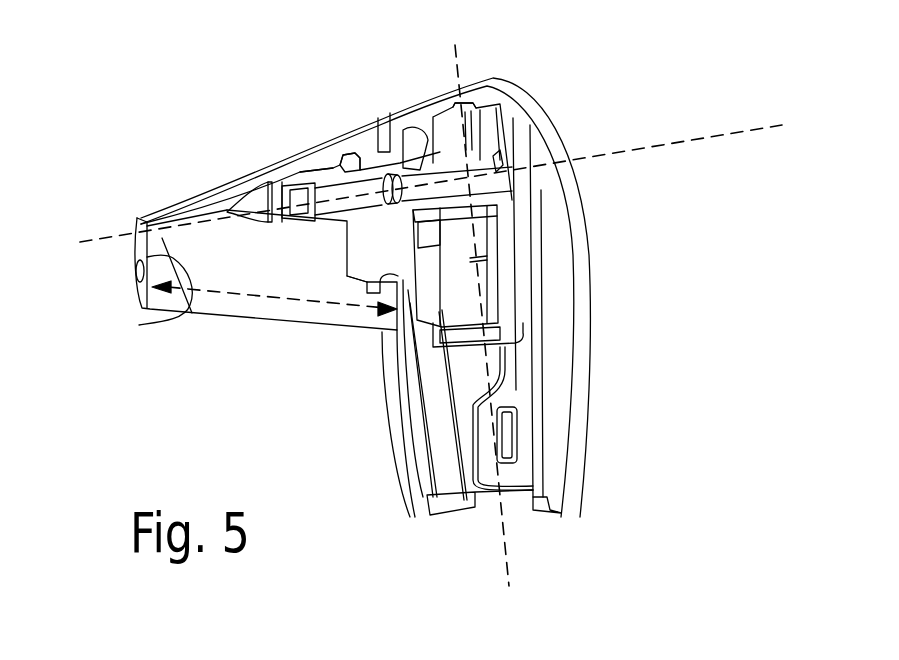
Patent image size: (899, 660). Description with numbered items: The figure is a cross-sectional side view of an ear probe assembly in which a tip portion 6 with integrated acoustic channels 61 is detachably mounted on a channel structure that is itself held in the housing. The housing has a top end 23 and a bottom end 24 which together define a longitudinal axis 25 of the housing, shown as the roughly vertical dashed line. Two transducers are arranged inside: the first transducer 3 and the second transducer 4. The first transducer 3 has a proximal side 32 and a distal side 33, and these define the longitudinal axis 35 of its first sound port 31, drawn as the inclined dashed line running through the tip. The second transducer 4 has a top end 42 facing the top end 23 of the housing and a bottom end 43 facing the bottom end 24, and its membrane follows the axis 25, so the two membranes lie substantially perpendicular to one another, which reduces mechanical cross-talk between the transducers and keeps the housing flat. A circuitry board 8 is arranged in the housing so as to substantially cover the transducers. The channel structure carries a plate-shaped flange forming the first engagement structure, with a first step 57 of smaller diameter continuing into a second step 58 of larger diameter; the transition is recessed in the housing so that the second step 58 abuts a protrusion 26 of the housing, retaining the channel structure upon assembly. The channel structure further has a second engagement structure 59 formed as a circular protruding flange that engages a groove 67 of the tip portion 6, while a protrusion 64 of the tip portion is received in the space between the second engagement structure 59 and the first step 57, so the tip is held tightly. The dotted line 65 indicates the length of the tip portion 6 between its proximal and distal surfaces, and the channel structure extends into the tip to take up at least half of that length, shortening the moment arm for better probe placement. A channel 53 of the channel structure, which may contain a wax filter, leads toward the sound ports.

The first transducer 3 is at (510, 150).
The second transducer 4 is at (490, 283).
The tip portion 6 is at (213, 307).
The circuitry board 8 is at (523, 333).
The top end 23 is at (455, 87).
The bottom end 24 is at (570, 515).
The longitudinal axis 25 is at (506, 578).
The protrusion 26 is at (384, 112).
The first sound port 31 is at (357, 157).
The proximal side 32 is at (405, 204).
The distal side 33 is at (520, 172).
The longitudinal axis 35 is at (737, 131).
The top end 42 is at (500, 196).
The bottom end 43 is at (460, 335).
The channel 53 is at (345, 215).
The first step 57 is at (363, 150).
The second step 58 is at (418, 130).
The second engagement structure 59 is at (362, 290).
The integrated acoustic channels 61 is at (152, 297).
The protrusion 64 is at (368, 292).
The length 65 is at (147, 257).
The groove 67 is at (352, 160).